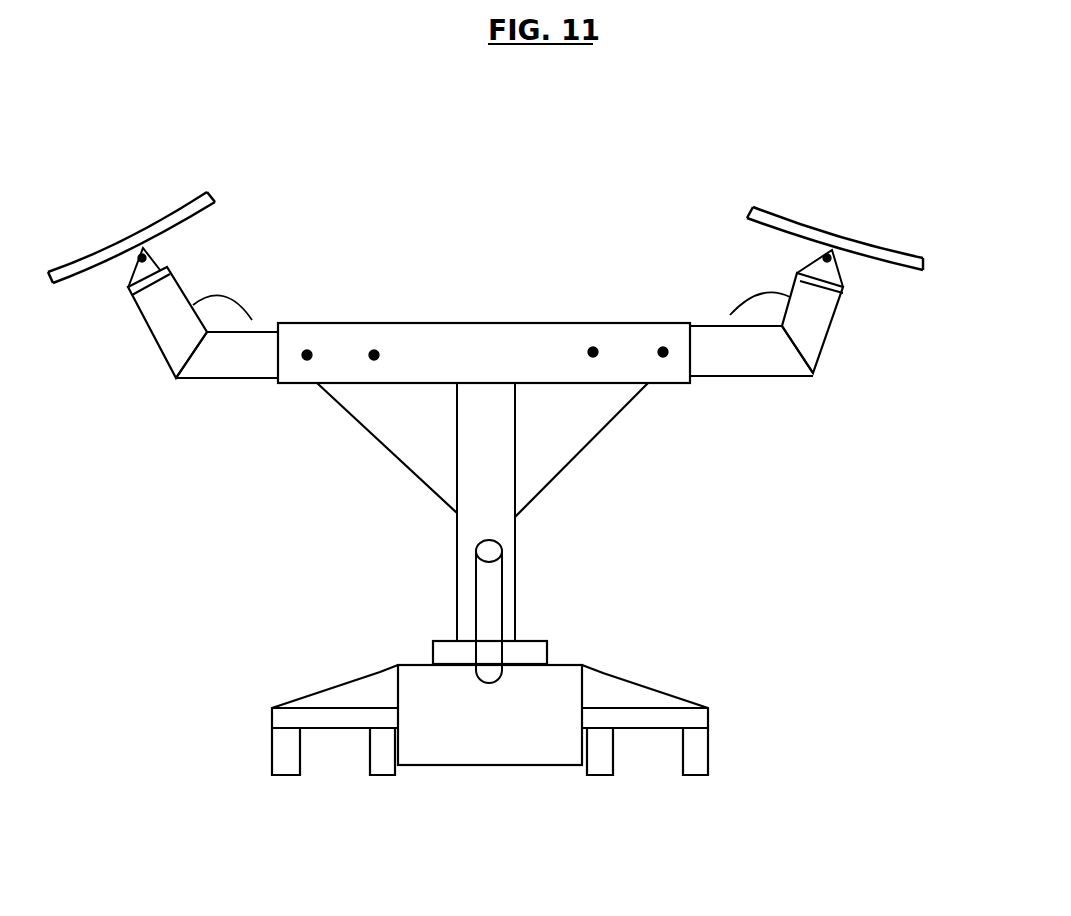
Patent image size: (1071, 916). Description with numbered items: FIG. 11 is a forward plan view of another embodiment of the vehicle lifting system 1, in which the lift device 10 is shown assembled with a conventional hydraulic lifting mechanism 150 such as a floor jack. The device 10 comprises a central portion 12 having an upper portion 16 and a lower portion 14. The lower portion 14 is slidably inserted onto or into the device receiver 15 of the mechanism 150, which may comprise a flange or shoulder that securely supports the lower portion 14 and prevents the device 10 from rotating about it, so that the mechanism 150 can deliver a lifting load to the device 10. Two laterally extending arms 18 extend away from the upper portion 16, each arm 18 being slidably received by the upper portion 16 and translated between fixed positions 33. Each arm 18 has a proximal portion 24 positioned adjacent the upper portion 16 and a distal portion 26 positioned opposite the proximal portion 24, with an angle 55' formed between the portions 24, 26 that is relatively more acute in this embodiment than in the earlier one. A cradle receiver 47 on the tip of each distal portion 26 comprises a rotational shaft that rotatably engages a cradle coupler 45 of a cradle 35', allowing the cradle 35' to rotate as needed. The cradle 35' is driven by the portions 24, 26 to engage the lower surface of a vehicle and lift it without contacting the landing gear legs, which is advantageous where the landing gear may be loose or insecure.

The system 1 is at (786, 786).
The lift device 10 is at (512, 227).
The central portion 12 is at (580, 474).
The lower portion 14 is at (487, 512).
The device receiver 15 is at (433, 645).
The upper portion 16 is at (485, 353).
The laterally extending arm 18 is at (162, 388).
The proximal portion 24 is at (193, 382).
The distal portion 26 is at (152, 330).
The fixed position 33 is at (374, 350).
The cradle 35' is at (485, 208).
The cradle coupler 45 is at (112, 262).
The cradle receiver 47 is at (150, 253).
The angle 55' is at (491, 282).
The hydraulic lifting mechanism 150 is at (617, 702).